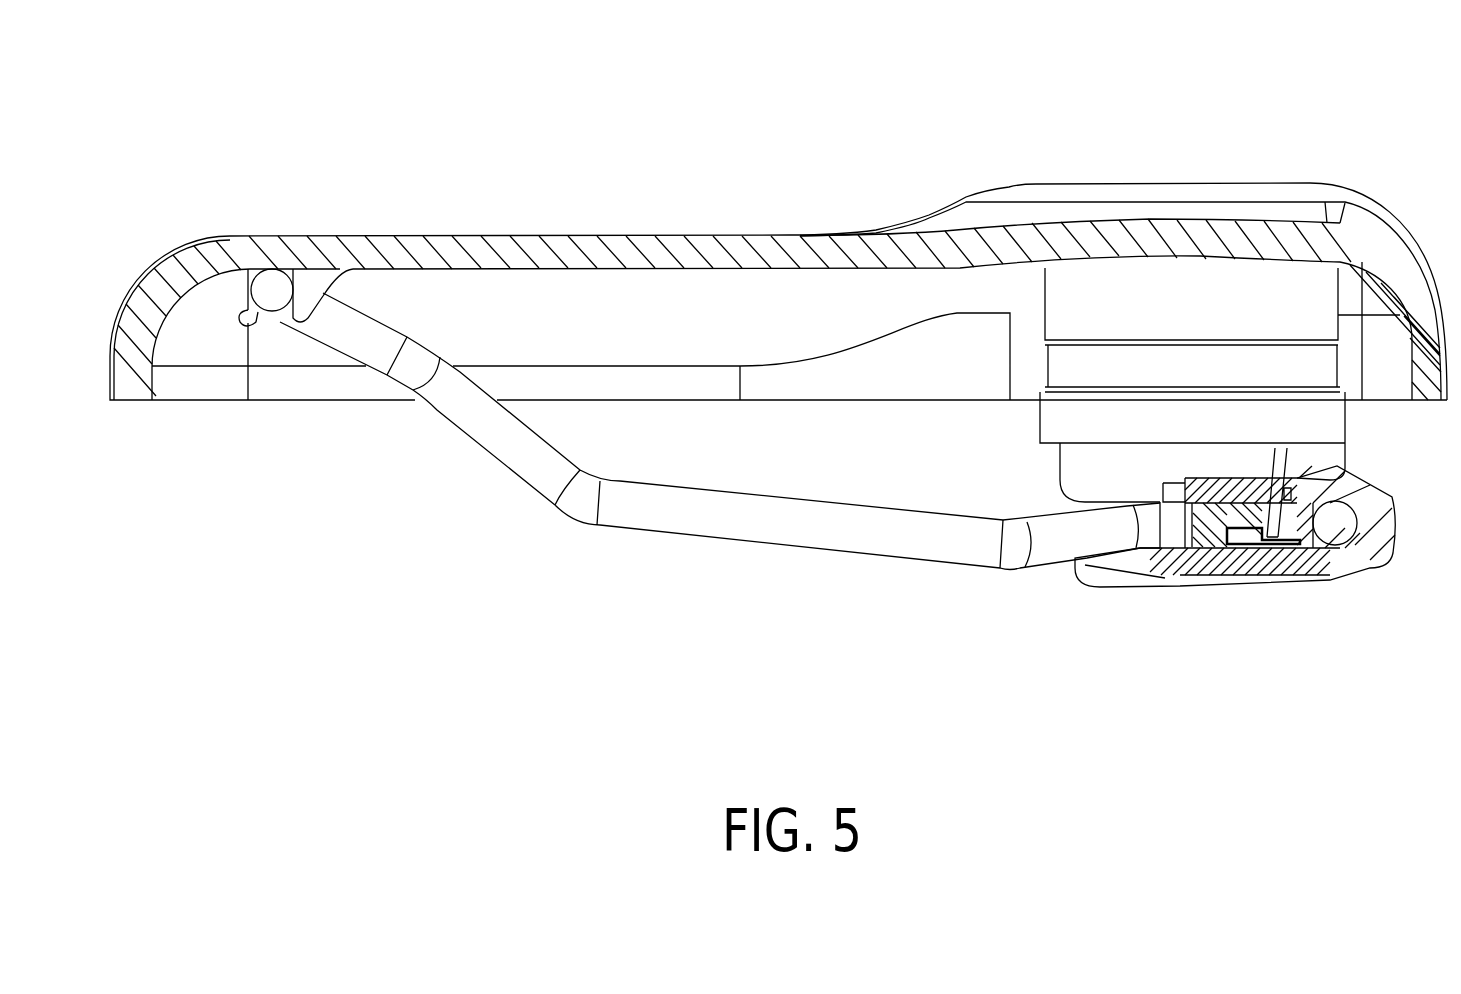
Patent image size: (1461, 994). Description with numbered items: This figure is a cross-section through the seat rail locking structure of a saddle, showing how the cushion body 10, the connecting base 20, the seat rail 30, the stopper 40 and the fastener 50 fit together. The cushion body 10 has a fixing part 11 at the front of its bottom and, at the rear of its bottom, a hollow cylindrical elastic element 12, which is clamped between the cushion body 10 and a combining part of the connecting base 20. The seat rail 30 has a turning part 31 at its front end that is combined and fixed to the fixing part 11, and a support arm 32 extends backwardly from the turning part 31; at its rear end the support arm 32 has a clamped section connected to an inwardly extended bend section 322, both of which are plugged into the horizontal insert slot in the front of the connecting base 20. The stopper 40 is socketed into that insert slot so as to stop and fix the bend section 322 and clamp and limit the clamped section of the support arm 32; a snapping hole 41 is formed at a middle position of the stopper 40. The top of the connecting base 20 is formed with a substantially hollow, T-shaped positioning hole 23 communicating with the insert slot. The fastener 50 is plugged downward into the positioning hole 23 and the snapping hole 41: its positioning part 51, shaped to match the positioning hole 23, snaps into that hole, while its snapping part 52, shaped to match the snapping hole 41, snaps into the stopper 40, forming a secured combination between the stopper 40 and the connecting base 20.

The cushion body 10 is at (1345, 206).
The fixing part 11 is at (242, 310).
The elastic element 12 is at (1062, 420).
The connecting base 20 is at (1286, 585).
The positioning hole 23 is at (1335, 523).
The seat rail 30 is at (672, 530).
The turning part 31 is at (277, 312).
The support arm 32 is at (865, 545).
The bend section 322 is at (1335, 535).
The stopper 40 is at (1206, 548).
The snapping hole 41 is at (1263, 536).
The fastener 50 is at (1279, 448).
The positioning part 51 is at (1374, 478).
The snapping part 52 is at (1220, 510).